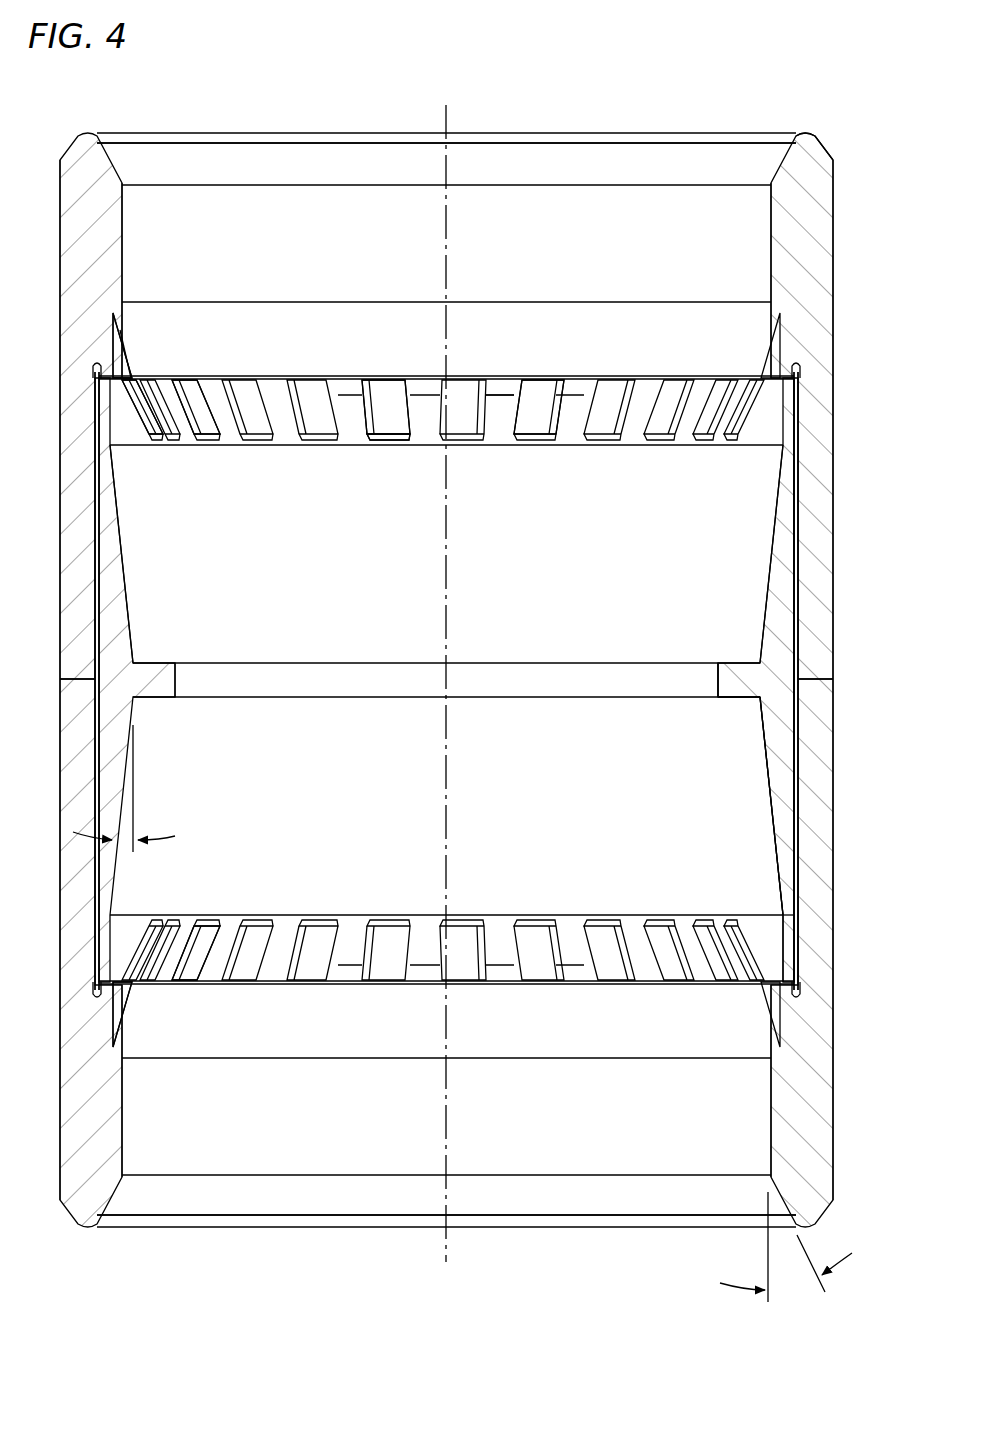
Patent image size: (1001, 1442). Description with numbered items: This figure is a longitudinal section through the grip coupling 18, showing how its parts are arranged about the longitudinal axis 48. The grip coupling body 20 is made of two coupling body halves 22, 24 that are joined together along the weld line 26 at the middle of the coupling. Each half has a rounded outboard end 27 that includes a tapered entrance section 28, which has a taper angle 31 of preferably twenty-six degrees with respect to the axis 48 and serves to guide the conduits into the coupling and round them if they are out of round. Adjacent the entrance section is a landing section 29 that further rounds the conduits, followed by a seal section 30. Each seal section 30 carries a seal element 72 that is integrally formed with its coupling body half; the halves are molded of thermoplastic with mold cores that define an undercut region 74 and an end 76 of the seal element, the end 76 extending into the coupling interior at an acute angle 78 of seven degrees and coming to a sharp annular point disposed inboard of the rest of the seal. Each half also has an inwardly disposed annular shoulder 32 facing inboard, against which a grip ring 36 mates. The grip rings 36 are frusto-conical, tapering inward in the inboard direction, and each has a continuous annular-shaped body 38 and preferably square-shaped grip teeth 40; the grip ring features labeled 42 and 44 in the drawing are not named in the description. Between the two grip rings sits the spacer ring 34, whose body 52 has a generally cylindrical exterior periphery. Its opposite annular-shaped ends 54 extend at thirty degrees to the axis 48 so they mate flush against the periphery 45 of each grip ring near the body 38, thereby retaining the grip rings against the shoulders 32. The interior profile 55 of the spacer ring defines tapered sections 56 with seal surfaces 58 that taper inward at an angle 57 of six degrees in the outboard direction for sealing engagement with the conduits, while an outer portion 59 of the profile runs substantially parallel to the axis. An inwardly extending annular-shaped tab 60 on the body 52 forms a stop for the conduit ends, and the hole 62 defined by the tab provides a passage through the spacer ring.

The grip coupling 18 is at (187, 110).
The grip coupling body 20 is at (60, 242).
The coupling body half 22 is at (67, 480).
The coupling body half 24 is at (80, 882).
The weld line 26 is at (72, 676).
The outboard end 27 is at (806, 130).
The tapered entrance section 28 is at (602, 160).
The landing section 29 is at (508, 212).
The seal section 30 is at (98, 340).
The taper angle 31 is at (786, 1249).
The annular shoulder 32 is at (97, 350).
The spacer ring 34 is at (90, 710).
The grip ring 36 is at (288, 376).
The annular-shaped body 38 is at (330, 396).
The grip teeth 40 is at (385, 425).
The roller 42 is at (545, 432).
The pocket 44 is at (510, 392).
The periphery 45 is at (122, 434).
The longitudinal axis 48 is at (450, 1252).
The body 52 is at (110, 645).
The annular-shaped end 54 is at (150, 392).
The interior profile 55 is at (752, 760).
The tapered section 56 is at (778, 569).
The angle 57 is at (125, 845).
The seal surface 58 is at (773, 502).
The outer portion 59 is at (782, 930).
The annular-shaped tab 60 is at (742, 705).
The hole 62 is at (713, 682).
The seal element 72 is at (122, 324).
The undercut region 74 is at (132, 373).
The end 76 is at (135, 376).
The acute angle 78 is at (125, 1015).